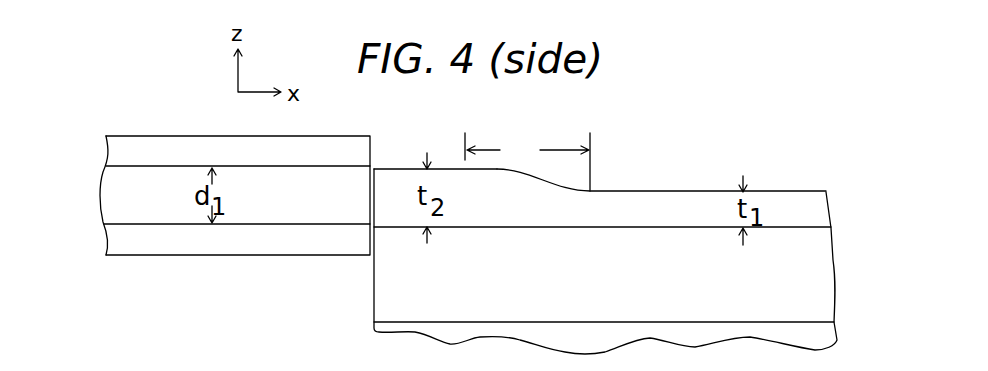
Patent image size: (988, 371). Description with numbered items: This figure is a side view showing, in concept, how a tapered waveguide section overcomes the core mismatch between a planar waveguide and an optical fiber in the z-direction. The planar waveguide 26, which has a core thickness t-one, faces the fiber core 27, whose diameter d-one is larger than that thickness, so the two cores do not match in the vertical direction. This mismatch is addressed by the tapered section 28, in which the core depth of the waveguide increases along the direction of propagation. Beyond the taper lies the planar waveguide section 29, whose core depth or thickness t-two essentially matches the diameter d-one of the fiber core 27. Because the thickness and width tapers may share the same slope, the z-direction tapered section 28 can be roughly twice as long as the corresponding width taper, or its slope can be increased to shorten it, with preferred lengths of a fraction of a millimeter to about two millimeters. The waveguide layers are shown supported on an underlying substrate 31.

The planar waveguide 26 is at (812, 199).
The fiber core 27 is at (101, 192).
The tapered section 28 is at (527, 162).
The planar waveguide section 29 is at (404, 172).
The substrate 31 is at (833, 265).